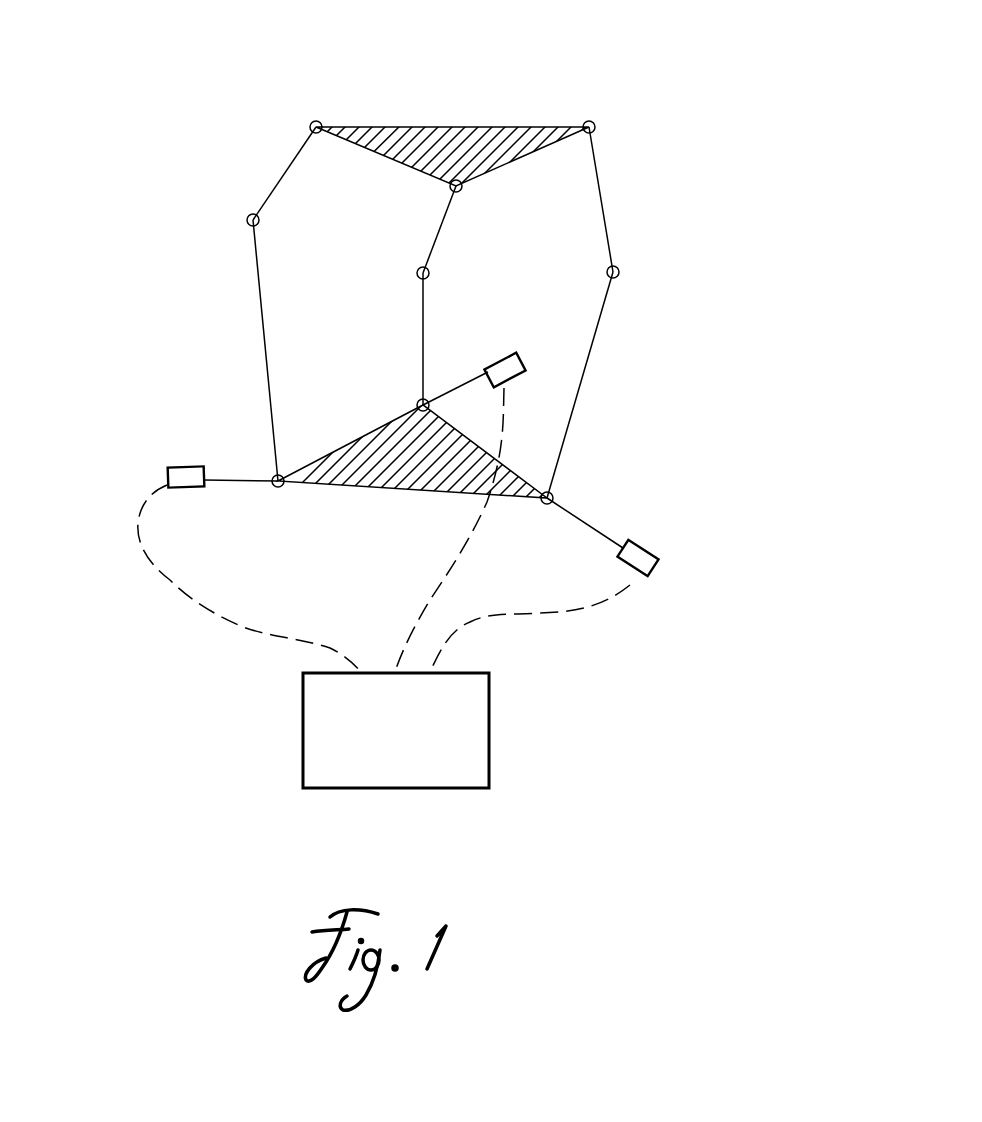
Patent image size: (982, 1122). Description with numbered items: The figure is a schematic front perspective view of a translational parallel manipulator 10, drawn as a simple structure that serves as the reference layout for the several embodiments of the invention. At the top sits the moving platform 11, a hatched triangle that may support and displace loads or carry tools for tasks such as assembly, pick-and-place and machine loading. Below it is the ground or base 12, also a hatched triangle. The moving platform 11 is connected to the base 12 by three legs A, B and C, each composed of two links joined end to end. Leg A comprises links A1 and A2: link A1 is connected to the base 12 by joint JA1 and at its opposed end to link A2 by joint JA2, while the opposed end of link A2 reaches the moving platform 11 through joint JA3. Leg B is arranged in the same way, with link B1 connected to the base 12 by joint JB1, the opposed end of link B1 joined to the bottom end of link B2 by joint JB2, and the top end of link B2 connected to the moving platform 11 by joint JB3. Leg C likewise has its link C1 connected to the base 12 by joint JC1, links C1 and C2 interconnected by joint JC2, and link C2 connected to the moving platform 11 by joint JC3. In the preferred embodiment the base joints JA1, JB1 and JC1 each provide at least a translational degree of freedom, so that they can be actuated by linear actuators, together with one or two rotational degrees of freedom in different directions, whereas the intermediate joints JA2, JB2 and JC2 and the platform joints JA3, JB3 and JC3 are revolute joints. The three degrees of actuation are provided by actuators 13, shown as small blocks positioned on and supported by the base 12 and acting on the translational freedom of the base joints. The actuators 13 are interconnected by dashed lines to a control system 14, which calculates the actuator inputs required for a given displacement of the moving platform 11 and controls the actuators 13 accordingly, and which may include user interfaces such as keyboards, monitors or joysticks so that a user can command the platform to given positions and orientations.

The translational parallel manipulator 10 is at (689, 128).
The moving platform 11 is at (460, 143).
The base 12 is at (400, 460).
The actuators 13 is at (190, 487).
The control system 14 is at (460, 757).
The leg A is at (213, 268).
The leg B is at (407, 323).
The leg C is at (643, 340).
The link A1 is at (265, 340).
The link A2 is at (285, 173).
The link B1 is at (423, 343).
The link B2 is at (443, 222).
The link C1 is at (575, 406).
The link C2 is at (602, 203).
The joint JA1 is at (278, 481).
The joint JA2 is at (253, 220).
The joint JA3 is at (316, 127).
The joint JB1 is at (423, 405).
The joint JB2 is at (423, 273).
The joint JB3 is at (456, 186).
The joint JC1 is at (547, 498).
The joint JC2 is at (613, 272).
The joint JC3 is at (589, 127).